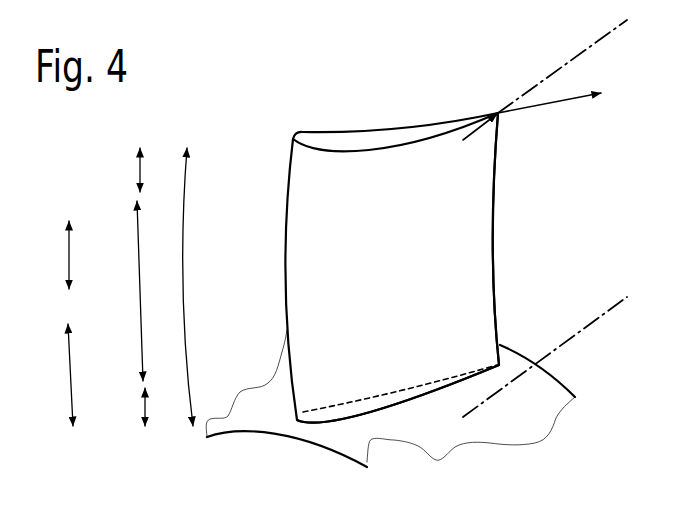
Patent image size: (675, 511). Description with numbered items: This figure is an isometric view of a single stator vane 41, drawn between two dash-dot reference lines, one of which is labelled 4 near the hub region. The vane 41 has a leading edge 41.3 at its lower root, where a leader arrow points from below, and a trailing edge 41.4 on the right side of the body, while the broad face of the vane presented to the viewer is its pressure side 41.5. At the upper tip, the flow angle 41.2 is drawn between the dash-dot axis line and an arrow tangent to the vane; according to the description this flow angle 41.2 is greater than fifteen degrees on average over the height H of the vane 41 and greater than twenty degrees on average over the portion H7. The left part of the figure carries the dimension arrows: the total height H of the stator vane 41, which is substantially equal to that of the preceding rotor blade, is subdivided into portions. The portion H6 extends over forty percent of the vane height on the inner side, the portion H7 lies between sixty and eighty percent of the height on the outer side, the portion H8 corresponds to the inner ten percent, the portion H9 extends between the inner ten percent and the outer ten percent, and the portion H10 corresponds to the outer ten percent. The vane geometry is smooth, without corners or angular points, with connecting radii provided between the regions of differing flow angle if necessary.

The rotor axis / rotor 4 is at (587, 322).
The stator vane 41 is at (264, 234).
The flow angle 41.2 is at (559, 69).
The leading edge 41.3 is at (286, 401).
The trailing edge 41.4 is at (476, 242).
The pressure side 41.5 is at (412, 226).
The height of the stator vane H is at (178, 287).
The inner-side height portion H6 is at (57, 375).
The outer-side height portion H7 is at (50, 255).
The inner ten percent height portion H8 is at (129, 407).
The intermediate height portion H9 is at (124, 291).
The outer ten percent height portion H10 is at (119, 170).